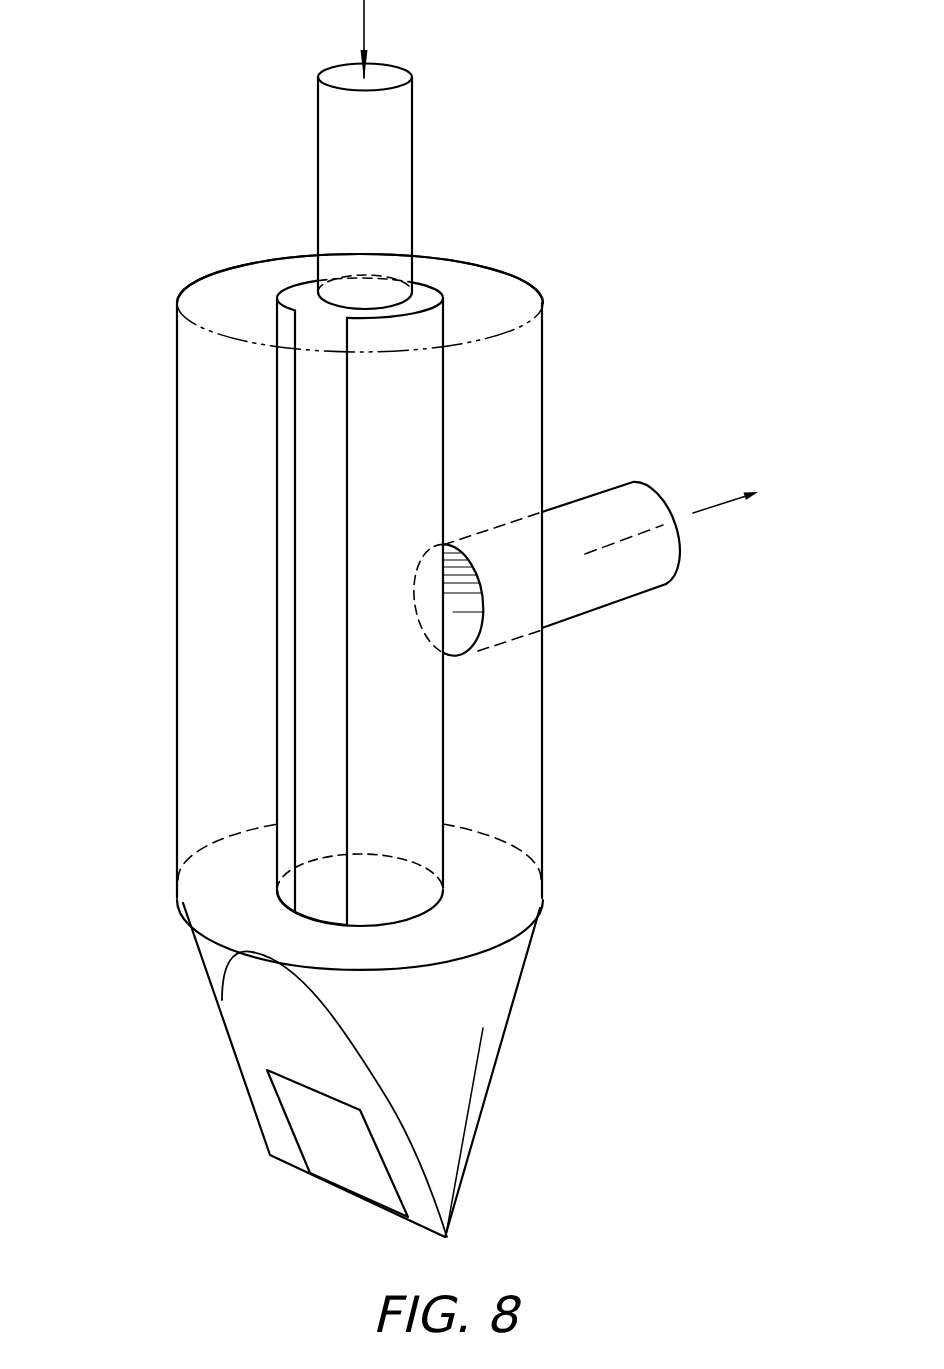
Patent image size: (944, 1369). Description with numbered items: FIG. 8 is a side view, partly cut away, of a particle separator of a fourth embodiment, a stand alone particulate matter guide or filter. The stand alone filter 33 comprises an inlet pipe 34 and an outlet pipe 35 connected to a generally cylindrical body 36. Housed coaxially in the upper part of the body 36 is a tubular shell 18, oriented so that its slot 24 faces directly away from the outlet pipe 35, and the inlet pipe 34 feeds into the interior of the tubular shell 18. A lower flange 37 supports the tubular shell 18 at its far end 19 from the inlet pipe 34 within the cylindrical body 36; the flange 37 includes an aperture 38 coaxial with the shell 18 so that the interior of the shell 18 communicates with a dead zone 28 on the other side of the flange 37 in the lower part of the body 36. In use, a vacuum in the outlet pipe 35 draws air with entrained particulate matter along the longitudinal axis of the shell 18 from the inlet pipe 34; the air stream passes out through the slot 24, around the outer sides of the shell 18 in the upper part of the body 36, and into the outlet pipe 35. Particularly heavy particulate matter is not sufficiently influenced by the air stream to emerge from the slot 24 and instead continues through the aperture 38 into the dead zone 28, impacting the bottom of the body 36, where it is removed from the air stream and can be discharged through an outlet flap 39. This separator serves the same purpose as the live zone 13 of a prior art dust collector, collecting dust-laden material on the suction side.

The live zone 13 is at (227, 642).
The tubular shell 18 is at (403, 772).
The far end 19 is at (438, 907).
The slot 24 is at (313, 702).
The dead zone 28 is at (485, 1000).
The stand alone filter 33 is at (655, 327).
The inlet pipe 34 is at (395, 167).
The outlet pipe 35 is at (587, 510).
The cylindrical body 36 is at (193, 534).
The lower flange 37 is at (200, 887).
The aperture 38 is at (324, 897).
The outlet flap 39 is at (337, 1150).